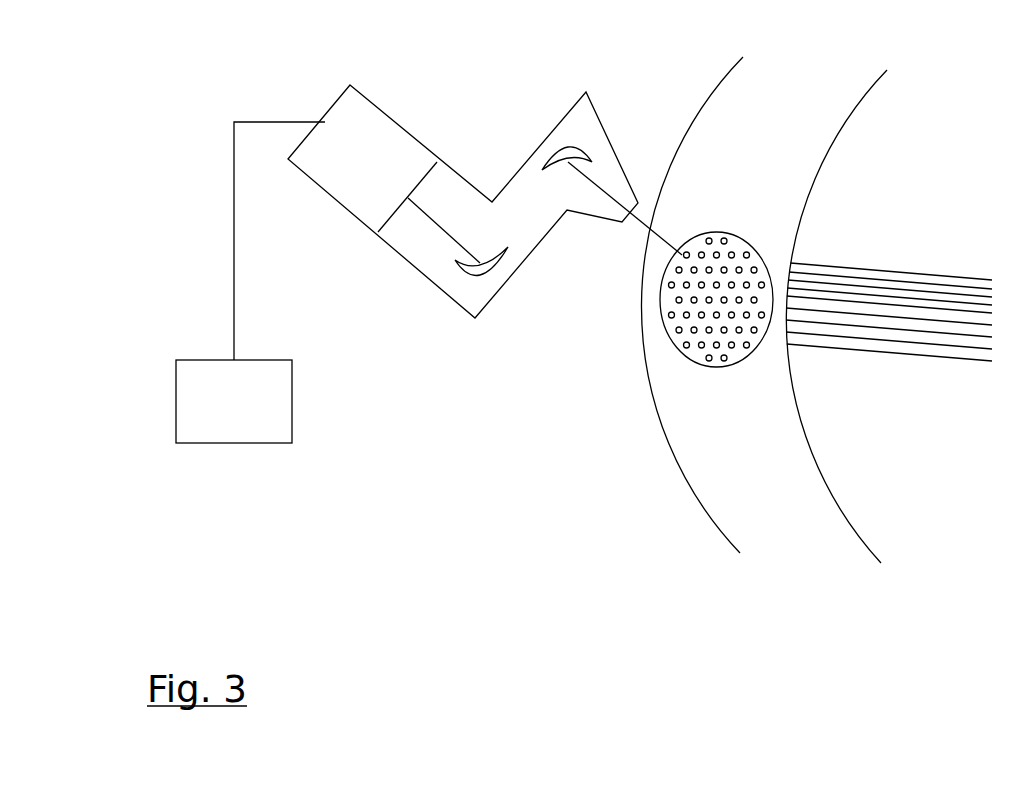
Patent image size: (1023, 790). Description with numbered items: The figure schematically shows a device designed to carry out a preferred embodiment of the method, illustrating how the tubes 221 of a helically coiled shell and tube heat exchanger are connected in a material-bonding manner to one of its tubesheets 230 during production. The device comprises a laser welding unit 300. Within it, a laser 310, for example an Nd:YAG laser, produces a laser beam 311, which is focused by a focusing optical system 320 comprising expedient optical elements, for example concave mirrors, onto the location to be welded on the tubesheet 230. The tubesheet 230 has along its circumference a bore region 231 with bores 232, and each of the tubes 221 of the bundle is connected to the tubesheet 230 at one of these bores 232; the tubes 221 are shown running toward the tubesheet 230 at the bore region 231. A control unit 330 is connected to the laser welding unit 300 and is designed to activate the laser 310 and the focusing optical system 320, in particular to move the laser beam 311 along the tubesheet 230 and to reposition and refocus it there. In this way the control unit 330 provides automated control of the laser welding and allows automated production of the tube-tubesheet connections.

The laser welding unit 300 is at (458, 207).
The laser 310 is at (395, 160).
The laser beam 311 is at (452, 236).
The focusing optical system 320 is at (498, 250).
The control unit 330 is at (273, 405).
The tubesheet 230 is at (825, 100).
The bore region 231 is at (716, 309).
The bores 232 is at (693, 240).
The tubes 221 is at (907, 322).